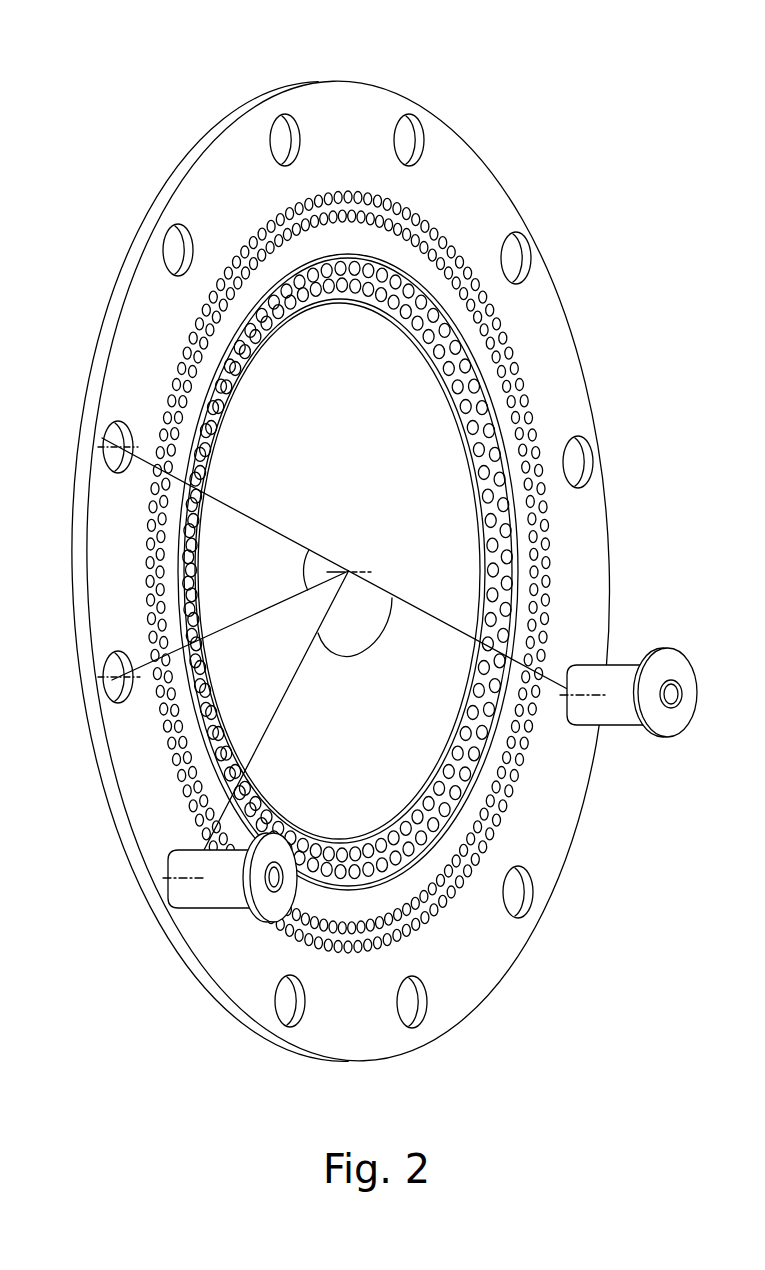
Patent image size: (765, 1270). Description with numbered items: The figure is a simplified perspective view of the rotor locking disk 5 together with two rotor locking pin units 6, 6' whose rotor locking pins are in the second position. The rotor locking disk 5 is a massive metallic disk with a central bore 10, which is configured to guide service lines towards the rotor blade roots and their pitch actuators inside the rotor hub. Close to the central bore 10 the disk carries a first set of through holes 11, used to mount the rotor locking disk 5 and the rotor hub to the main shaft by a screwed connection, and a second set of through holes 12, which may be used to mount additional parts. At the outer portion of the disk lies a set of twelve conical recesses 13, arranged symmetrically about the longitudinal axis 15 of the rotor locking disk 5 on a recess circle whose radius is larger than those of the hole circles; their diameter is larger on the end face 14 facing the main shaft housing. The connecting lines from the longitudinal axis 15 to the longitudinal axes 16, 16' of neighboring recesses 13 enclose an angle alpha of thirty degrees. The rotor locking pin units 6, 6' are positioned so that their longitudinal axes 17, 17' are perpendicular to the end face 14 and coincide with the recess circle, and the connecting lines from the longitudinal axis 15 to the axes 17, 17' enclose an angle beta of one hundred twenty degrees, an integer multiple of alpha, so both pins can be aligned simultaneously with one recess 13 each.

The rotor locking disk 5 is at (432, 92).
The rotor locking pin unit 6 is at (246, 956).
The rotor locking pin unit 6' is at (666, 734).
The central bore 10 is at (408, 453).
The first set of through holes 11 is at (391, 302).
The second set of through holes 12 is at (254, 235).
The recesses 13 is at (518, 262).
The end face 14 is at (568, 369).
The longitudinal axis of the rotor locking disk 15 is at (352, 568).
The longitudinal axis of a recess 16 is at (194, 667).
The longitudinal axis of a neighboring recess 16' is at (297, 556).
The longitudinal axis of a rotor locking pin unit 17 is at (182, 905).
The longitudinal axis of the other rotor locking pin unit 17' is at (628, 654).